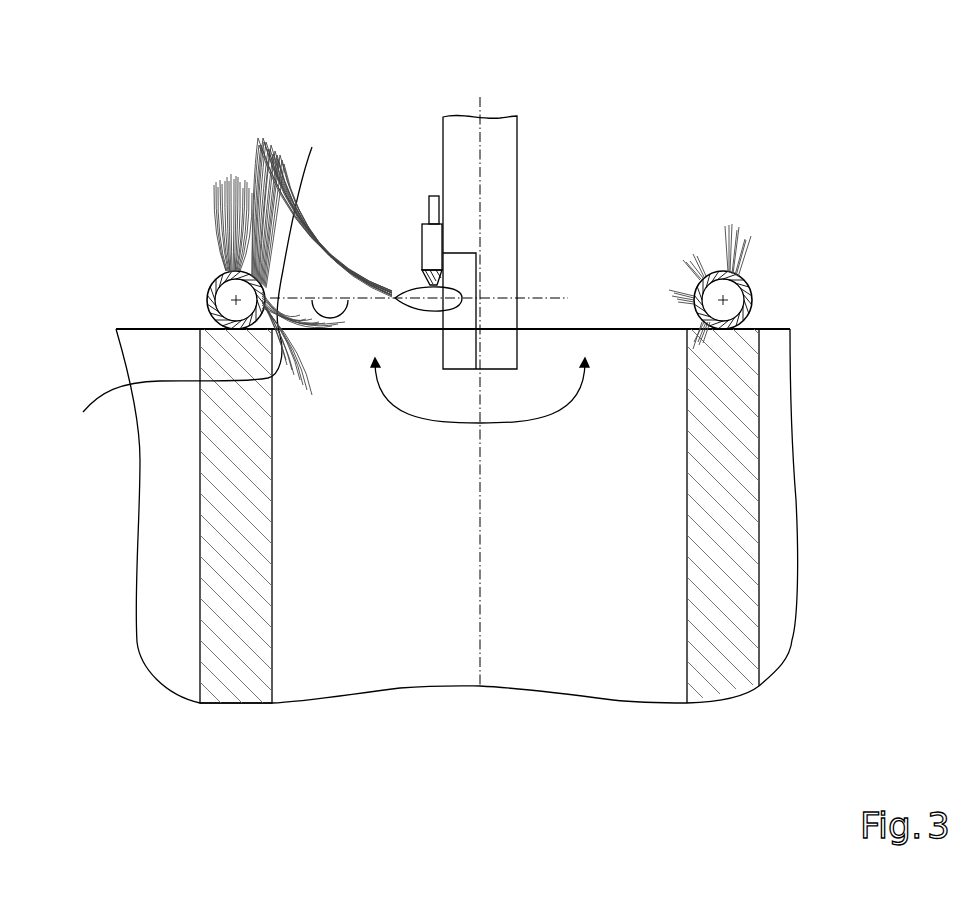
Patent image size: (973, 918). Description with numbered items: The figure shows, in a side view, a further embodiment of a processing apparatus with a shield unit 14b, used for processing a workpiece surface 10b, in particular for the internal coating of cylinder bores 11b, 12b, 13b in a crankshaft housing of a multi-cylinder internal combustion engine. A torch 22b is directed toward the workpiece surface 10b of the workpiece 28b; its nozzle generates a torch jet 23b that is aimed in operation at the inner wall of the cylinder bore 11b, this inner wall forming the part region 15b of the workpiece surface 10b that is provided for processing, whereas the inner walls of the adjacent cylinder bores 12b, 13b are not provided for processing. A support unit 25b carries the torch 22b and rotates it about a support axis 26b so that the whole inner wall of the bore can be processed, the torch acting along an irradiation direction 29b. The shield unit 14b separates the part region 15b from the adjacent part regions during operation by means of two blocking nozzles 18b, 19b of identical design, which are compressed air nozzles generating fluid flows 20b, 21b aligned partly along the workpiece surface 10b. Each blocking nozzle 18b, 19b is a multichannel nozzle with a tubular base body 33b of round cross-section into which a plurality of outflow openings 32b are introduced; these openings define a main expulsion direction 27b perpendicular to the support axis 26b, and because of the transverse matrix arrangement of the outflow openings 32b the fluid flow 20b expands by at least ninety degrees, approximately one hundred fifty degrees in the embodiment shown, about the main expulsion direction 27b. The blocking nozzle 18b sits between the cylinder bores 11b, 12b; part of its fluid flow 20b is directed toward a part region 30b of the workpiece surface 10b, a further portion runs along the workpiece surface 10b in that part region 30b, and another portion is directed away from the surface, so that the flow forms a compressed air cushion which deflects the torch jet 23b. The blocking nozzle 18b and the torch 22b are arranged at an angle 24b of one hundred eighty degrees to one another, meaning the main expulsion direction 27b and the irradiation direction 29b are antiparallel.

The workpiece surface 10b is at (475, 471).
The cylinder bore 11b is at (610, 650).
The cylinder bore 12b is at (156, 627).
The cylinder bore 13b is at (775, 622).
The shield unit 14b is at (463, 236).
The part region 15b is at (274, 418).
The blocking nozzle 18b is at (159, 269).
The blocking nozzle 19b is at (753, 282).
The fluid flow 20b is at (240, 180).
The fluid flow 21b is at (725, 240).
The torch 22b is at (443, 293).
The torch jet 23b is at (357, 290).
The angle 24b is at (175, 294).
The support unit 25b is at (527, 353).
The support axis 26b is at (480, 188).
The main expulsion direction 27b is at (313, 302).
The workpiece 28b is at (740, 432).
The irradiation direction 29b is at (380, 290).
The part region 30b is at (210, 323).
The outflow openings 32b is at (258, 277).
The base body 33b is at (210, 293).